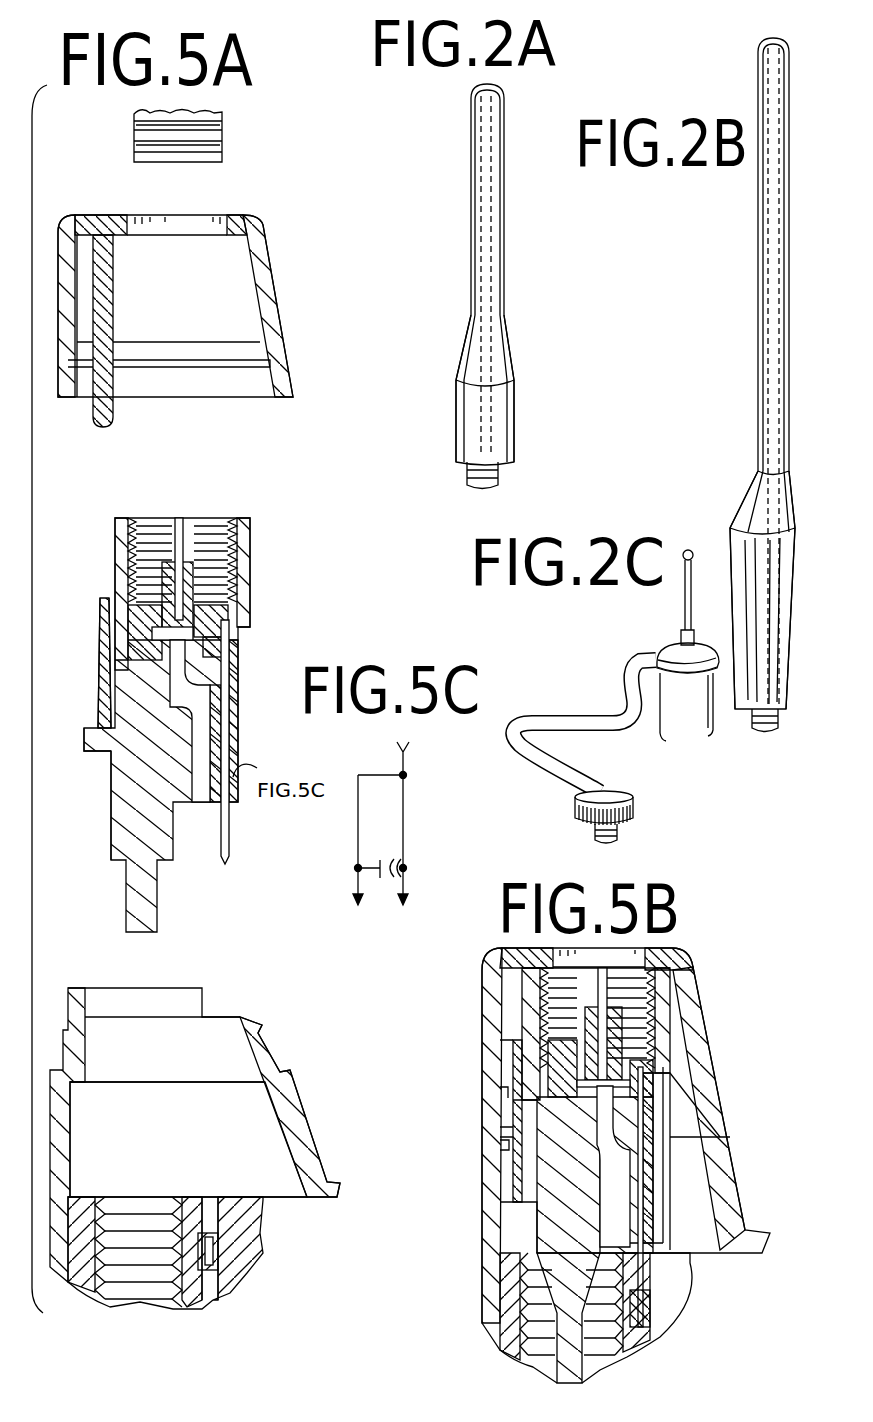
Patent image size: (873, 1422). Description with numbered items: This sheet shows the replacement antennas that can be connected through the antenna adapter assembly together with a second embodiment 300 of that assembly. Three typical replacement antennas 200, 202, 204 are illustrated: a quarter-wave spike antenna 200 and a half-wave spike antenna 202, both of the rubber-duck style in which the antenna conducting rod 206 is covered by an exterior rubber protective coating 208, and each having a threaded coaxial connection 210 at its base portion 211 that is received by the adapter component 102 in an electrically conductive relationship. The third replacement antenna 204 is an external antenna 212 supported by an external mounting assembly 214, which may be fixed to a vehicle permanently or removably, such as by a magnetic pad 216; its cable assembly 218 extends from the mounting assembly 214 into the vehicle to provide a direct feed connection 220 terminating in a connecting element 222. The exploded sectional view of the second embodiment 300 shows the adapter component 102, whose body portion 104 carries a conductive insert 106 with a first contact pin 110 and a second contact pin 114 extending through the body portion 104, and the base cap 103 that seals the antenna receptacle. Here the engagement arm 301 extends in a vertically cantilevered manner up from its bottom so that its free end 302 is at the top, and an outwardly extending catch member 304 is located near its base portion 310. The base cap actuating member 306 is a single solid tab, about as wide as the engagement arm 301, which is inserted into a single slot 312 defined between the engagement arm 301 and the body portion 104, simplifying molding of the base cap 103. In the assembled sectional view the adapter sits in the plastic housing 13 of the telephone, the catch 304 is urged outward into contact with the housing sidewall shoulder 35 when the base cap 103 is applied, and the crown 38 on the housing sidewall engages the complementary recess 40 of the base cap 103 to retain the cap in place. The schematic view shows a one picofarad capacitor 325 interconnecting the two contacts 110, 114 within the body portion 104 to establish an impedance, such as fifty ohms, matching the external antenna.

In FIG. 5A, the plastic housing 13 is at (63, 1153).
In FIG. 5A, the internal shoulder 35 is at (78, 1085).
In FIG. 5B, the internal shoulder 35 is at (730, 1137).
In FIG. 5B, the crown 38 is at (700, 1080).
In FIG. 5B, the recess 40 is at (700, 1098).
In FIG. 5A, the adapter component 102 is at (120, 826).
In FIG. 5A, the base cap 103 is at (56, 297).
In FIG. 5A, the body portion 104 is at (140, 753).
In FIG. 5A, the conductive insert 106 is at (233, 518).
In FIG. 5A, the first contact pin 110 is at (231, 842).
In FIG. 5C, the first contact pin 110 is at (405, 882).
In FIG. 5A, the second contact pin 114 is at (222, 864).
In FIG. 5C, the second contact pin 114 is at (357, 880).
In FIG. 5B, the second contact pin 114 is at (613, 1166).
In FIG. 2A, the quarter-wave spike antenna 200 is at (466, 210).
In FIG. 2B, the half-wave spike antenna 202 is at (752, 258).
In FIG. 2C, the replacement antenna 204 is at (644, 635).
In FIG. 2A, the antenna conducting rod 206 is at (481, 294).
In FIG. 2B, the antenna conducting rod 206 is at (768, 259).
In FIG. 2A, the exterior rubber protective coating 208 is at (500, 382).
In FIG. 2B, the exterior rubber protective coating 208 is at (780, 440).
In FIG. 5A, the threaded coaxial connection 210 is at (134, 124).
In FIG. 2A, the threaded coaxial connection 210 is at (467, 477).
In FIG. 2B, the threaded coaxial connection 210 is at (779, 728).
In FIG. 2A, the base portion 211 is at (470, 412).
In FIG. 2B, the base portion 211 is at (790, 628).
In FIG. 2C, the external antenna 212 is at (678, 606).
In FIG. 2C, the external mounting assembly 214 is at (710, 665).
In FIG. 2C, the magnetic pad 216 is at (660, 715).
In FIG. 2C, the cable assembly 218 is at (577, 717).
In FIG. 2C, the direct feed connection 220 is at (528, 760).
In FIG. 2C, the connecting element 222 is at (618, 831).
In FIG. 5A, the second embodiment of antenna adapter assembly 300 is at (34, 497).
In FIG. 5A, the engagement arm 301 is at (97, 690).
In FIG. 5B, the engagement arm 301 is at (476, 1092).
In FIG. 5A, the free end 302 is at (100, 604).
In FIG. 5A, the catch member 304 is at (87, 701).
In FIG. 5B, the catch member 304 is at (500, 1162).
In FIG. 5A, the base cap actuating member 306 is at (108, 427).
In FIG. 5B, the base cap actuating member 306 is at (530, 1008).
In FIG. 5A, the base portion 310 is at (90, 737).
In FIG. 5B, the base portion 310 is at (520, 1183).
In FIG. 5A, the slot 312 is at (97, 642).
In FIG. 5B, the slot 312 is at (538, 1013).
In FIG. 5C, the capacitor 325 is at (405, 867).